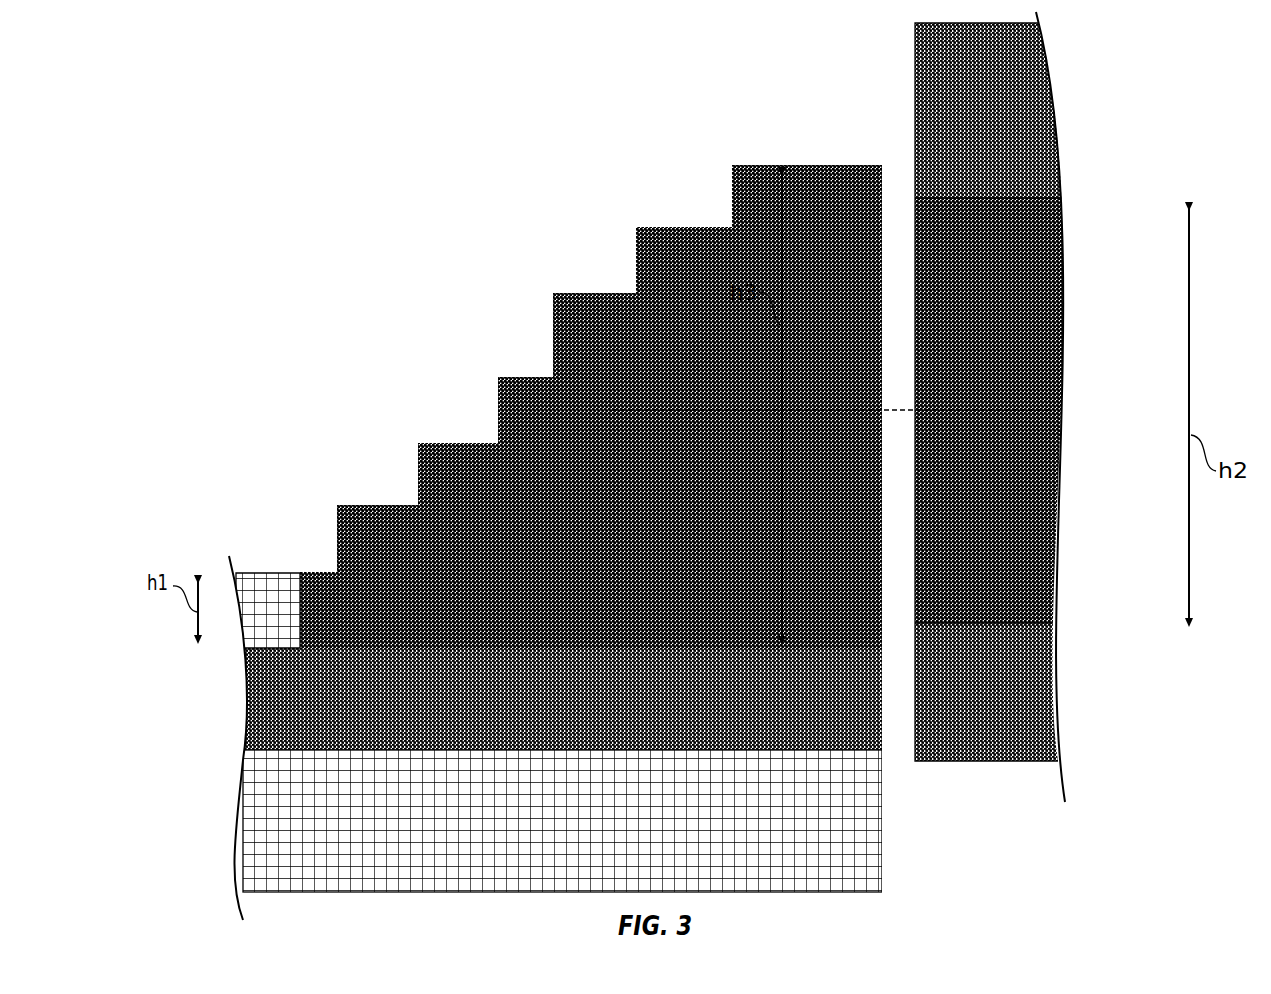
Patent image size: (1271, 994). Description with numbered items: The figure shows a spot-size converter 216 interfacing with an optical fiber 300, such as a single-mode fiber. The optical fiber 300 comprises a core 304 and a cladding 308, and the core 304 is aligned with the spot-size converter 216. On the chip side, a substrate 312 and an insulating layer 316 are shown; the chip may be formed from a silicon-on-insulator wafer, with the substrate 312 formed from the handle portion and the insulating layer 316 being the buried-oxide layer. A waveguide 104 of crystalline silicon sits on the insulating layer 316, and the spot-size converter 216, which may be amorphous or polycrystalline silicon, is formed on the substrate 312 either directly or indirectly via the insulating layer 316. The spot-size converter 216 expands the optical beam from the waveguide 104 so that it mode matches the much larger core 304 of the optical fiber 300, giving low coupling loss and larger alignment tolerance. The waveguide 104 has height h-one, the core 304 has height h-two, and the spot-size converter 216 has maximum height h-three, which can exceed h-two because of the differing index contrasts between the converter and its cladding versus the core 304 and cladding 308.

The waveguide 104 is at (283, 582).
The spot-size converter 216 is at (565, 302).
The optical fiber 300 is at (1055, 457).
The core 304 is at (1046, 374).
The cladding 308 is at (1052, 153).
The substrate 312 is at (247, 808).
The insulating layer 316 is at (252, 696).